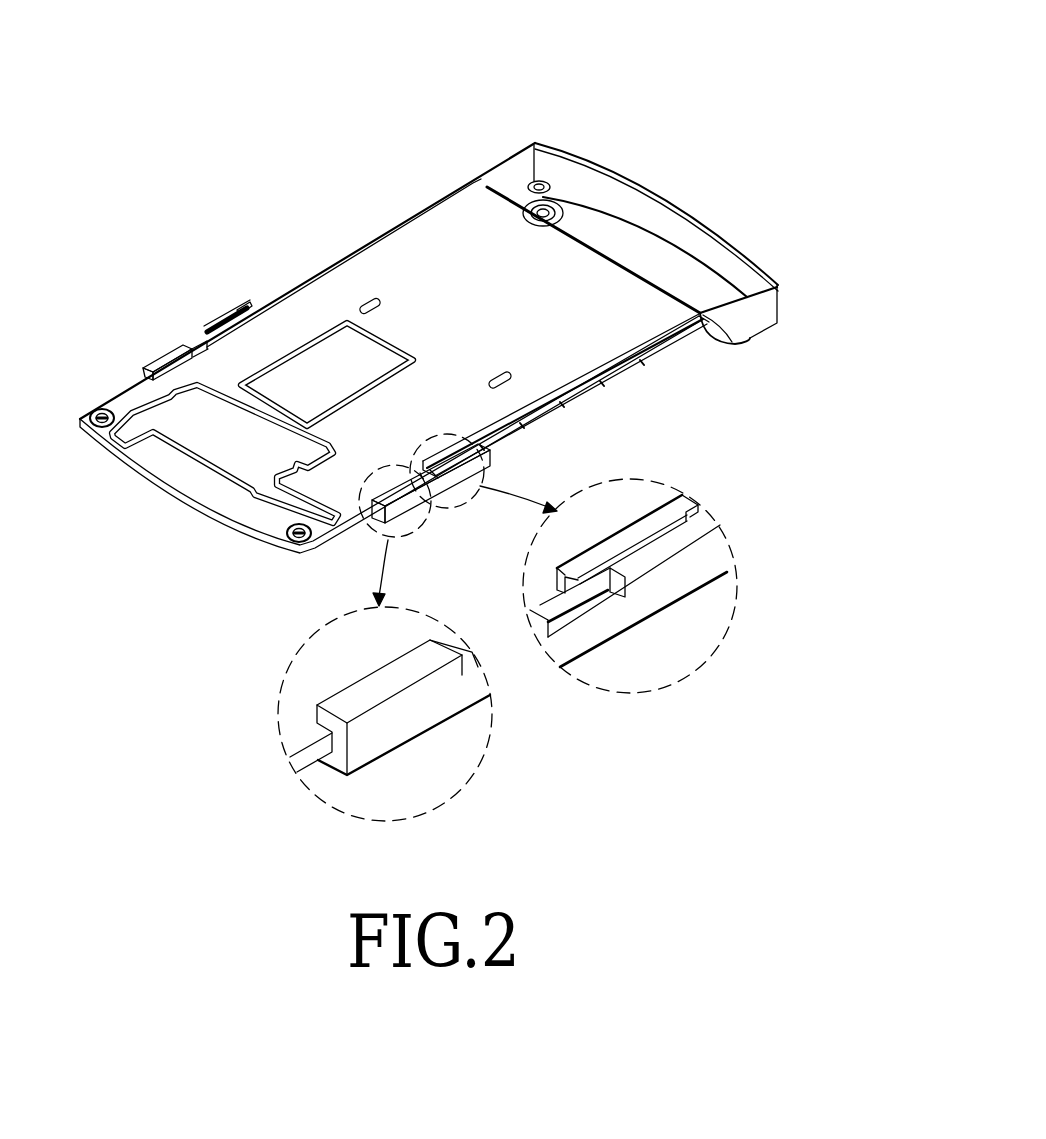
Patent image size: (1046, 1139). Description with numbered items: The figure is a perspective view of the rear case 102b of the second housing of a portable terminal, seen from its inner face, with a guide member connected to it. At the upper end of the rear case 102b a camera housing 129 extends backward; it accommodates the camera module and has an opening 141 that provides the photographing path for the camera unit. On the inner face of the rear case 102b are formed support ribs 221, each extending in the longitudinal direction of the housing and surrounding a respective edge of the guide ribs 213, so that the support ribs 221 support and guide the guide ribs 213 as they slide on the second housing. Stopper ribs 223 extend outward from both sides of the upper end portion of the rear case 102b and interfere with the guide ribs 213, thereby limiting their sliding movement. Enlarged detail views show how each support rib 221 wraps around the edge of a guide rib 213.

The rear case 102b is at (437, 52).
The support ribs 221 is at (290, 298).
The opening 141 is at (557, 202).
The camera housing 129 is at (752, 318).
The stopper ribs 223 is at (733, 320).
The guide ribs 213 is at (403, 713).